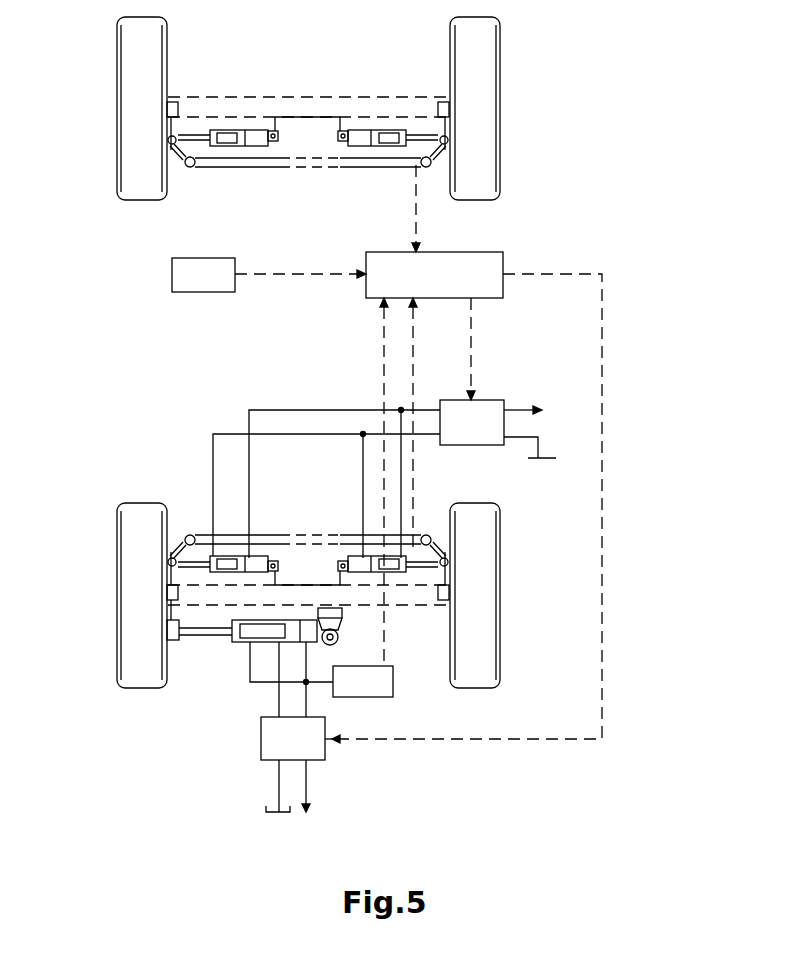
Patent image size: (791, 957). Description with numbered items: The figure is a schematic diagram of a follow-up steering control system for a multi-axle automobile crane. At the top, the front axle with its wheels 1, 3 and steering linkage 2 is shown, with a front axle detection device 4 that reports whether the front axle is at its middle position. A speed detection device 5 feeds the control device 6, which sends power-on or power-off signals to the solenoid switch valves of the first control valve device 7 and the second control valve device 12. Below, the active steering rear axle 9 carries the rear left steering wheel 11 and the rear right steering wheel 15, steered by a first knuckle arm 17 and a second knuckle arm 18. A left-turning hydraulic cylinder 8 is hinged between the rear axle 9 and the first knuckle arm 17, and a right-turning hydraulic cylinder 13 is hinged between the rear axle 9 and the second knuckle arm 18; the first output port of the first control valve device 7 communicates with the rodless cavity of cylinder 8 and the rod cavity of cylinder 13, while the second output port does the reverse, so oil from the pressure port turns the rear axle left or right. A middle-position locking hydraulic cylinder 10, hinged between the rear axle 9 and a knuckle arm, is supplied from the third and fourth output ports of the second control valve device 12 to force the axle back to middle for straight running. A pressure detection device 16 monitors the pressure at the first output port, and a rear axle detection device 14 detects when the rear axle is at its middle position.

The front left wheel 1 is at (138, 49).
The front steering axle 2 is at (163, 133).
The front right wheel 3 is at (478, 42).
The front axle detection device 4 is at (452, 125).
The speed detection device 5 is at (178, 274).
The control device 6 is at (444, 282).
The first control valve device 7 is at (490, 412).
The left-turning hydraulic cylinder 8 is at (175, 549).
The active steering rear axle 9 is at (173, 585).
The middle-position locking hydraulic cylinder 10 is at (175, 616).
The rear left steering wheel 11 is at (138, 635).
The second control valve device 12 is at (275, 739).
The right-turning hydraulic cylinder 13 is at (452, 557).
The rear axle detection device 14 is at (450, 597).
The rear right steering wheel 15 is at (475, 653).
The pressure detection device 16 is at (375, 688).
The first knuckle arm 17 is at (177, 547).
The second knuckle arm 18 is at (440, 548).